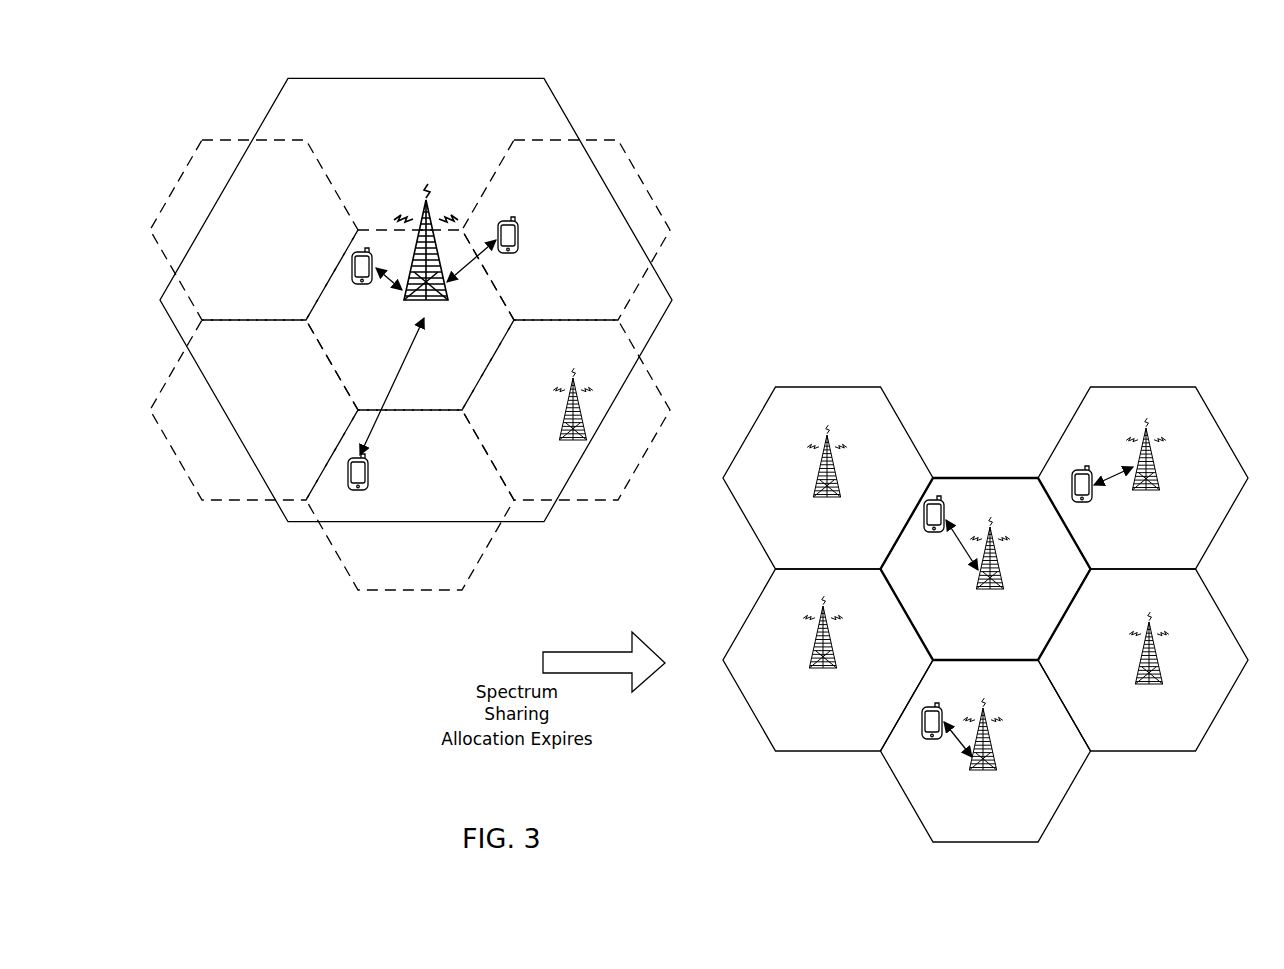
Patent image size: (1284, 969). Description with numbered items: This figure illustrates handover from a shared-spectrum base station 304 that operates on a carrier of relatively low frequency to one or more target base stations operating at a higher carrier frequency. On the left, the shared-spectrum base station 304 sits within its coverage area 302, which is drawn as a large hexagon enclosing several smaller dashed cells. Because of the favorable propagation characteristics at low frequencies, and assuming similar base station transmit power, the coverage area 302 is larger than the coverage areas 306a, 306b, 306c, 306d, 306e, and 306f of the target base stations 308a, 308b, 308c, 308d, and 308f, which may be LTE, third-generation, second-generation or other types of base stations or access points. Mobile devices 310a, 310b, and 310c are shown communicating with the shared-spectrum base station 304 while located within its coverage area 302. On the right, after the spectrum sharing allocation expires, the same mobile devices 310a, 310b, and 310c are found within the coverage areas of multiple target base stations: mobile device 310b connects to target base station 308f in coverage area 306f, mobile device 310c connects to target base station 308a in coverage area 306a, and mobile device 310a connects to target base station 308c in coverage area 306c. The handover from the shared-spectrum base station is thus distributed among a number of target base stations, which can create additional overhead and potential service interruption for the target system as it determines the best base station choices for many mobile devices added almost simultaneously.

The coverage area 302 is at (544, 78).
The shared-spectrum base station 304 is at (430, 200).
The coverage area 306a is at (1145, 387).
The coverage area 306b is at (1172, 751).
The coverage area 306c is at (905, 792).
The coverage area 306d is at (818, 751).
The coverage area 306e is at (790, 387).
The coverage area 306f is at (1010, 478).
The target base station 308a is at (1160, 445).
The target base station 308b is at (1170, 640).
The target base station 308c is at (997, 765).
The target base station 308d is at (870, 640).
The target base station 308f is at (840, 482).
The mobile device 310a is at (348, 478).
The mobile device 310b is at (360, 250).
The mobile device 310c is at (503, 218).